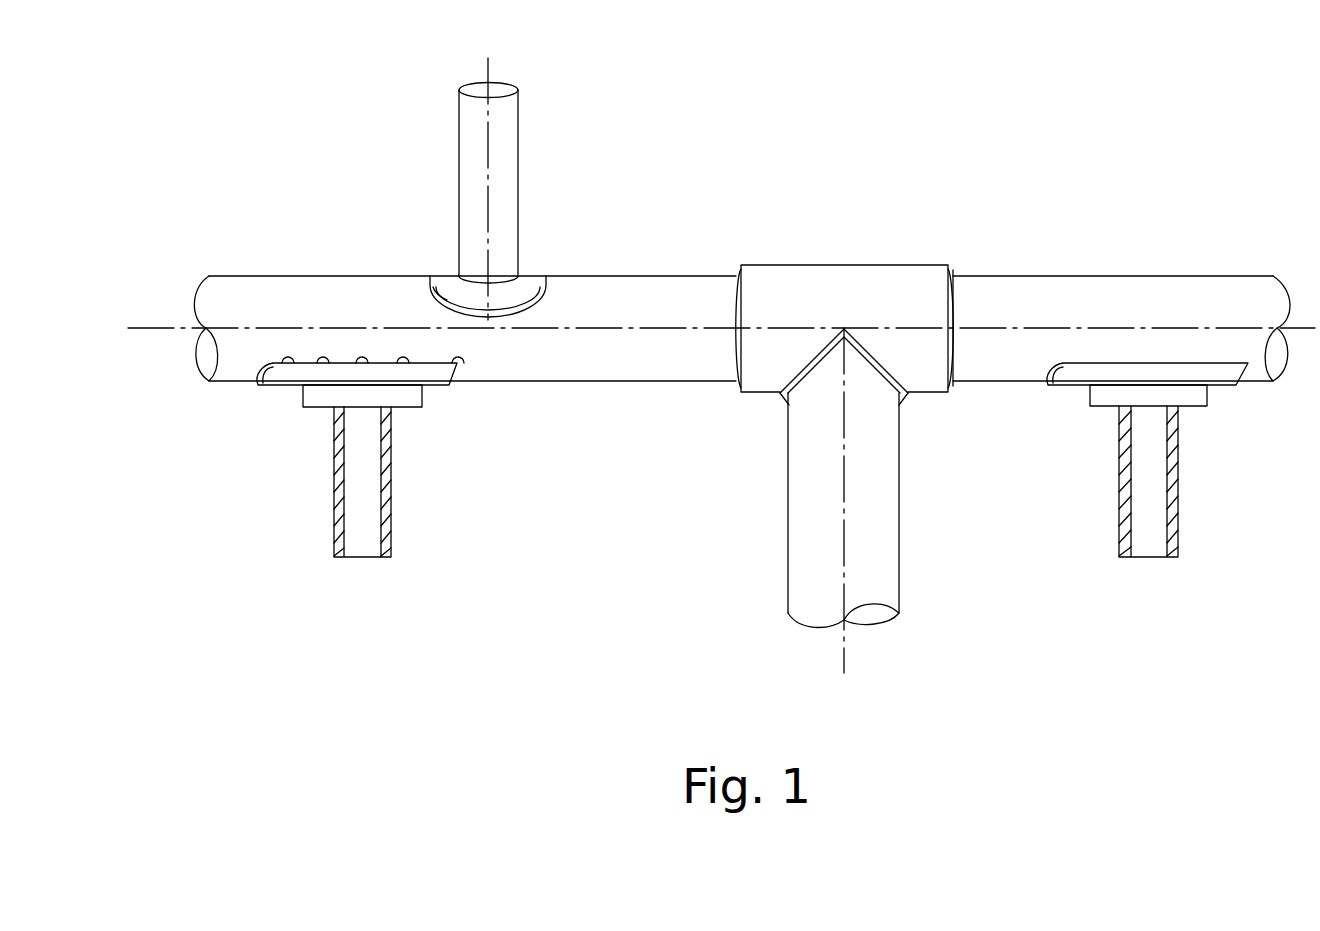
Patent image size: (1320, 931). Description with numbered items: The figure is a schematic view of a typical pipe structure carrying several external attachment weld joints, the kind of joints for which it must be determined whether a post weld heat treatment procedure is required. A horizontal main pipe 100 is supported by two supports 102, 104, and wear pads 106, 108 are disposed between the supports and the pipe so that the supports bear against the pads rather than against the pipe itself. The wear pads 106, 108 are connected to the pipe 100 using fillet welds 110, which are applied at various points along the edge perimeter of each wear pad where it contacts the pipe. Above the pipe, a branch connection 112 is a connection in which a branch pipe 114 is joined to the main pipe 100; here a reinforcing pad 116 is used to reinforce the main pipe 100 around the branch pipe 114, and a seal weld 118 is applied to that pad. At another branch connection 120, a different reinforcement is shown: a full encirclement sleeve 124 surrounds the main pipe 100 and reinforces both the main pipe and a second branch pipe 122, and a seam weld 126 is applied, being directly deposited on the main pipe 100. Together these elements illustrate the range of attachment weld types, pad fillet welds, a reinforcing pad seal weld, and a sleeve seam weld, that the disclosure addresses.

The pipe 100 is at (1198, 276).
The support 102 is at (1177, 513).
The support 104 is at (391, 517).
The wear pad 106 is at (1213, 388).
The wear pad 108 is at (435, 389).
The fillet welds 110 is at (322, 368).
The branch connection 112 is at (423, 218).
The branch pipe 114 is at (518, 125).
The reinforcing pad 116 is at (432, 272).
The seal weld 118 is at (425, 291).
The branch connection 120 is at (723, 473).
The branch pipe 122 is at (900, 505).
The full encirclement sleeve 124 is at (898, 265).
The seam weld 126 is at (952, 288).